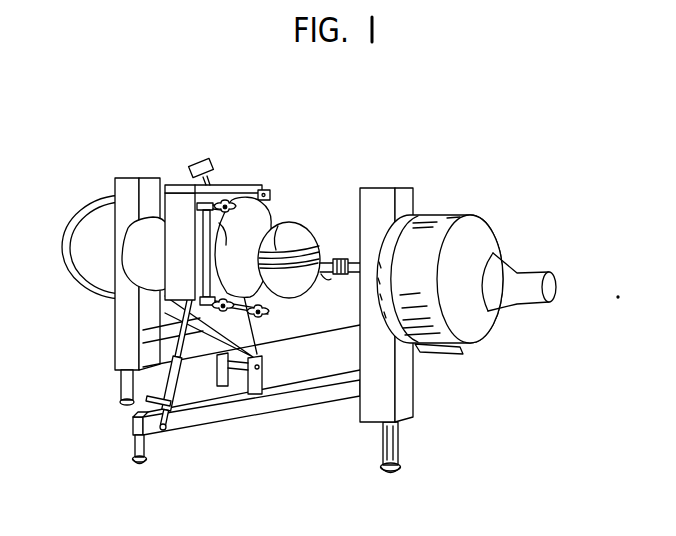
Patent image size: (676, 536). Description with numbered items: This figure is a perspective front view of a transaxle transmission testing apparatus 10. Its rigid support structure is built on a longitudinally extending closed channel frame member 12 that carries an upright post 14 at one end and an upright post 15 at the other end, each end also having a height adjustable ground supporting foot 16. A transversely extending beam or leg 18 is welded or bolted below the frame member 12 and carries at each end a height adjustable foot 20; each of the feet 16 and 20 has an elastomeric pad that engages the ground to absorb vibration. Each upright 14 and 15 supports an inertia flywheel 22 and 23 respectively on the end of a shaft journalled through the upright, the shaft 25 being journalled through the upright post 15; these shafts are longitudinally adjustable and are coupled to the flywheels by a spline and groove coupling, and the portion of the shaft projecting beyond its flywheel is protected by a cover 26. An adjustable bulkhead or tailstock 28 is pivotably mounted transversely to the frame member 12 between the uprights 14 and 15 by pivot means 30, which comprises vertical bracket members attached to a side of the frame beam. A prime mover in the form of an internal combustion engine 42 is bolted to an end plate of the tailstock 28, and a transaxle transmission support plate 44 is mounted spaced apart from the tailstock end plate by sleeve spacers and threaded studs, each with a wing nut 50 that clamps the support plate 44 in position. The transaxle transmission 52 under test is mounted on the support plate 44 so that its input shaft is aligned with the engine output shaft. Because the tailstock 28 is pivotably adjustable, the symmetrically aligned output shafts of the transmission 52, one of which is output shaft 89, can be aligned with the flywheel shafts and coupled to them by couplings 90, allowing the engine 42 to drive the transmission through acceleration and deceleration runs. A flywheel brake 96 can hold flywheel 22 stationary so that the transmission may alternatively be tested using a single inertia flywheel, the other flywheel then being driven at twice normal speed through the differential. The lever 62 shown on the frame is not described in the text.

The transaxle transmission testing apparatus 10 is at (468, 424).
The closed channel frame member 12 is at (246, 384).
The upright post 14 is at (128, 358).
The upright post 15 is at (408, 404).
The height adjustable ground supporting foot 16 is at (126, 390).
The transverse beam or leg 18 is at (223, 402).
The height adjustable foot 20 is at (143, 466).
The inertia flywheel 22 is at (87, 298).
The inertia flywheel 23 is at (451, 215).
The shaft 25 is at (337, 259).
The cover 26 is at (510, 266).
The adjustable bulkhead or tailstock 28 is at (226, 184).
The pivot means 30 is at (270, 343).
The internal combustion engine 42 is at (146, 239).
The transaxle transmission support plate 44 is at (243, 247).
The wing nut 50 is at (262, 190).
The transaxle transmission 52 is at (288, 219).
The lever 62 is at (178, 385).
The output shaft 89 is at (327, 278).
The coupling 90 is at (335, 259).
The flywheel brake 96 is at (457, 354).